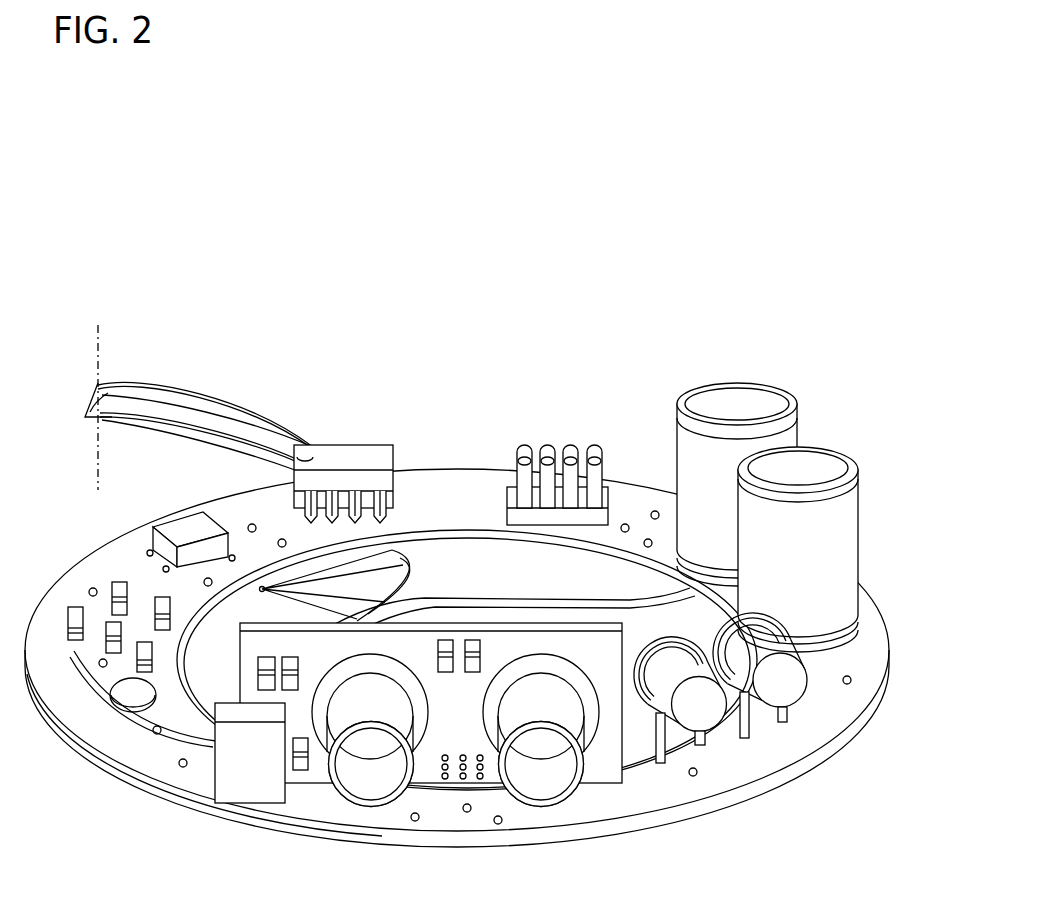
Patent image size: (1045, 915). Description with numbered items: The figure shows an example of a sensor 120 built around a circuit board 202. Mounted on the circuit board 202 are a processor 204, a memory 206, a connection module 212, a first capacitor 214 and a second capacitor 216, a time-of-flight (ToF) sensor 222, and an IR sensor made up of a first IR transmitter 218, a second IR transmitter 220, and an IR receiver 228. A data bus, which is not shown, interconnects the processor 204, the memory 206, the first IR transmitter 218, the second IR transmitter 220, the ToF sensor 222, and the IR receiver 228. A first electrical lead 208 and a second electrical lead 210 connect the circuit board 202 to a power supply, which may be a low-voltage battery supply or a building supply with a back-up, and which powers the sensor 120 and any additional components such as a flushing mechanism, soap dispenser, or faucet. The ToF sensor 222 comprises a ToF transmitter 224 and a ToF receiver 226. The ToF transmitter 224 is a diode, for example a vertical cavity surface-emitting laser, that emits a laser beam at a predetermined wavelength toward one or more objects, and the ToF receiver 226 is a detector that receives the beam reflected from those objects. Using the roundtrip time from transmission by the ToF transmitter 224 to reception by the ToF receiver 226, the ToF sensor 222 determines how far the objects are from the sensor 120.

The sensor 120 is at (199, 248).
The circuit board 202 is at (100, 562).
The processor 204 is at (157, 522).
The memory 206 is at (388, 453).
The first electrical lead 208 is at (233, 397).
The second electrical lead 210 is at (237, 442).
The connection module 212 is at (507, 498).
The first capacitor 214 is at (677, 428).
The second capacitor 216 is at (852, 488).
The first IR transmitter 218 is at (809, 690).
The second IR transmitter 220 is at (725, 717).
The time-of-flight sensor 222 is at (622, 770).
The ToF transmitter 224 is at (345, 788).
The ToF receiver 226 is at (563, 790).
The IR receiver 228 is at (217, 788).